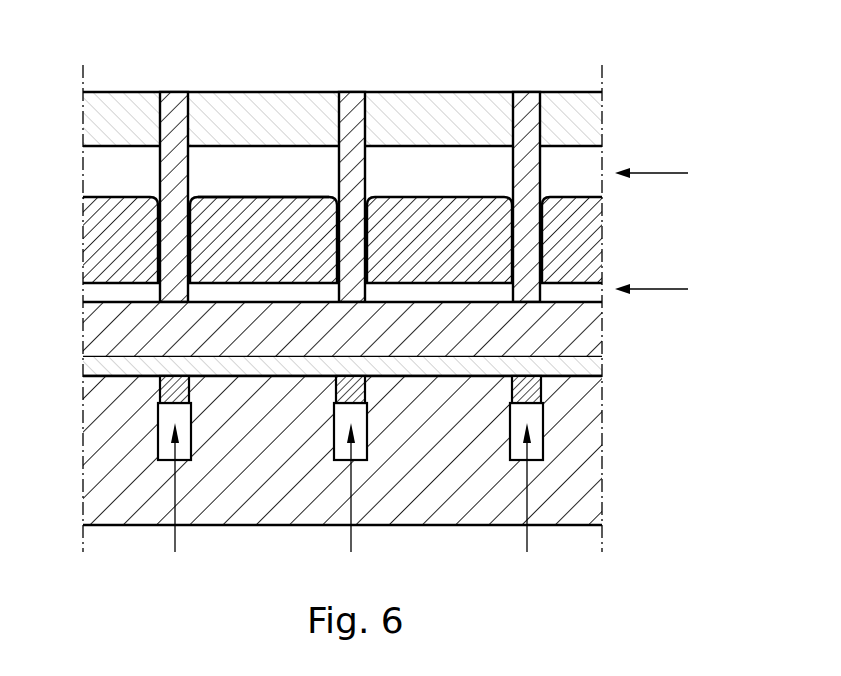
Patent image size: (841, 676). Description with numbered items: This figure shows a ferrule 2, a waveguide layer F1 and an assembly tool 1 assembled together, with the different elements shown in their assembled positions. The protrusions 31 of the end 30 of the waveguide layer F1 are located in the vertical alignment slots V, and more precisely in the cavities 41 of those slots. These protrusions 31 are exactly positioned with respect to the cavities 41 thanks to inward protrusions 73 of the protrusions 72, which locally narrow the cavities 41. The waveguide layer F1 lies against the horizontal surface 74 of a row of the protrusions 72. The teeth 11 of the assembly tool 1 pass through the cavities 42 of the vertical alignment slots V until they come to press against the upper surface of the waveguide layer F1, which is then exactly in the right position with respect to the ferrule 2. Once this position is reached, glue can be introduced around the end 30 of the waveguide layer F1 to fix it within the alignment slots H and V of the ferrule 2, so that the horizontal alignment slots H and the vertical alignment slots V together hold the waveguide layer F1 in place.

The assembly tool 1 is at (583, 115).
The teeth 11 is at (533, 157).
The ferrule 2 is at (583, 482).
The end 30 is at (582, 367).
The protrusions 31 is at (543, 388).
The cavities 41 is at (535, 433).
The cavities 42 is at (542, 227).
The protrusions 72 is at (582, 262).
The inward protrusions 73 is at (512, 199).
The horizontal surface 74 is at (262, 198).
The waveguide layer F1 is at (582, 325).
The alignment slots H is at (662, 232).
The vertical alignment slots V is at (351, 503).